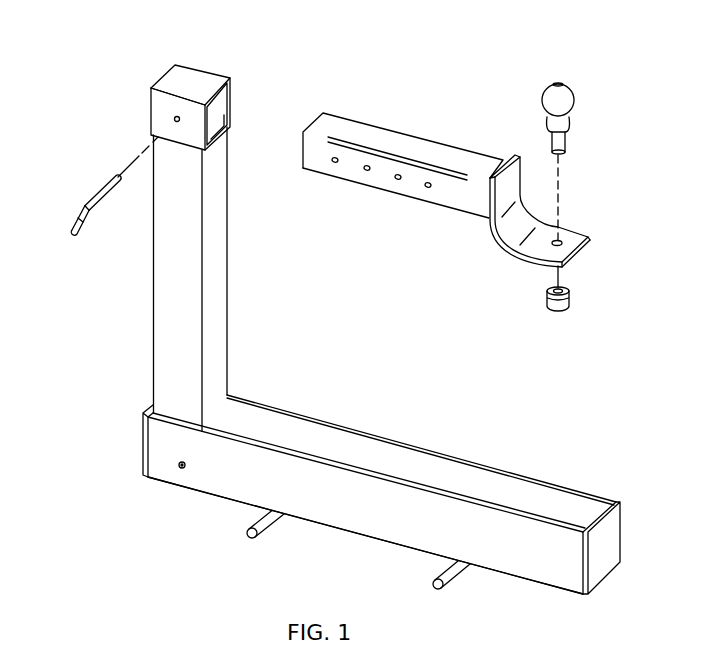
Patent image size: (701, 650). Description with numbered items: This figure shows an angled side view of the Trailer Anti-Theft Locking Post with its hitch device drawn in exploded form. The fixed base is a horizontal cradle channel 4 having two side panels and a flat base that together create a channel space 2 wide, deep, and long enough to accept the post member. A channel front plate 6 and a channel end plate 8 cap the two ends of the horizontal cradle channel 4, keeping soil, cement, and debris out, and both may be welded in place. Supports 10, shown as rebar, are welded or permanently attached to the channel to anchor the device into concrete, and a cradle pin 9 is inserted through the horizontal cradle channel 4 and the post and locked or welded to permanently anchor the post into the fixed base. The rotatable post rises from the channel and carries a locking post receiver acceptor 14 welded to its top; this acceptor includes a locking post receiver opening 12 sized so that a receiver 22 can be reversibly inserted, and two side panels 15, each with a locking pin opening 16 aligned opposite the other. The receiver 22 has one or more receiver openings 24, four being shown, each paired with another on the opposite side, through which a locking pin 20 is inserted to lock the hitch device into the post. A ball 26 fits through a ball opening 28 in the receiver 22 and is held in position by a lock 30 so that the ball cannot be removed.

The channel space 2 is at (558, 497).
The horizontal cradle channel 4 is at (325, 505).
The channel front plate 6 is at (605, 538).
The channel end plate 8 is at (143, 423).
The cradle pin 9 is at (181, 471).
The supports 10 is at (453, 570).
The locking post receiver opening 12 is at (223, 110).
The locking post receiver acceptor 14 is at (180, 82).
The side panels 15 is at (155, 98).
The locking pin opening 16 is at (174, 119).
The locking pin 20 is at (72, 222).
The receiver 22 is at (425, 150).
The receiver opening 24 is at (398, 180).
The ball 26 is at (560, 100).
The ball opening 28 is at (563, 243).
The lock 30 is at (572, 300).